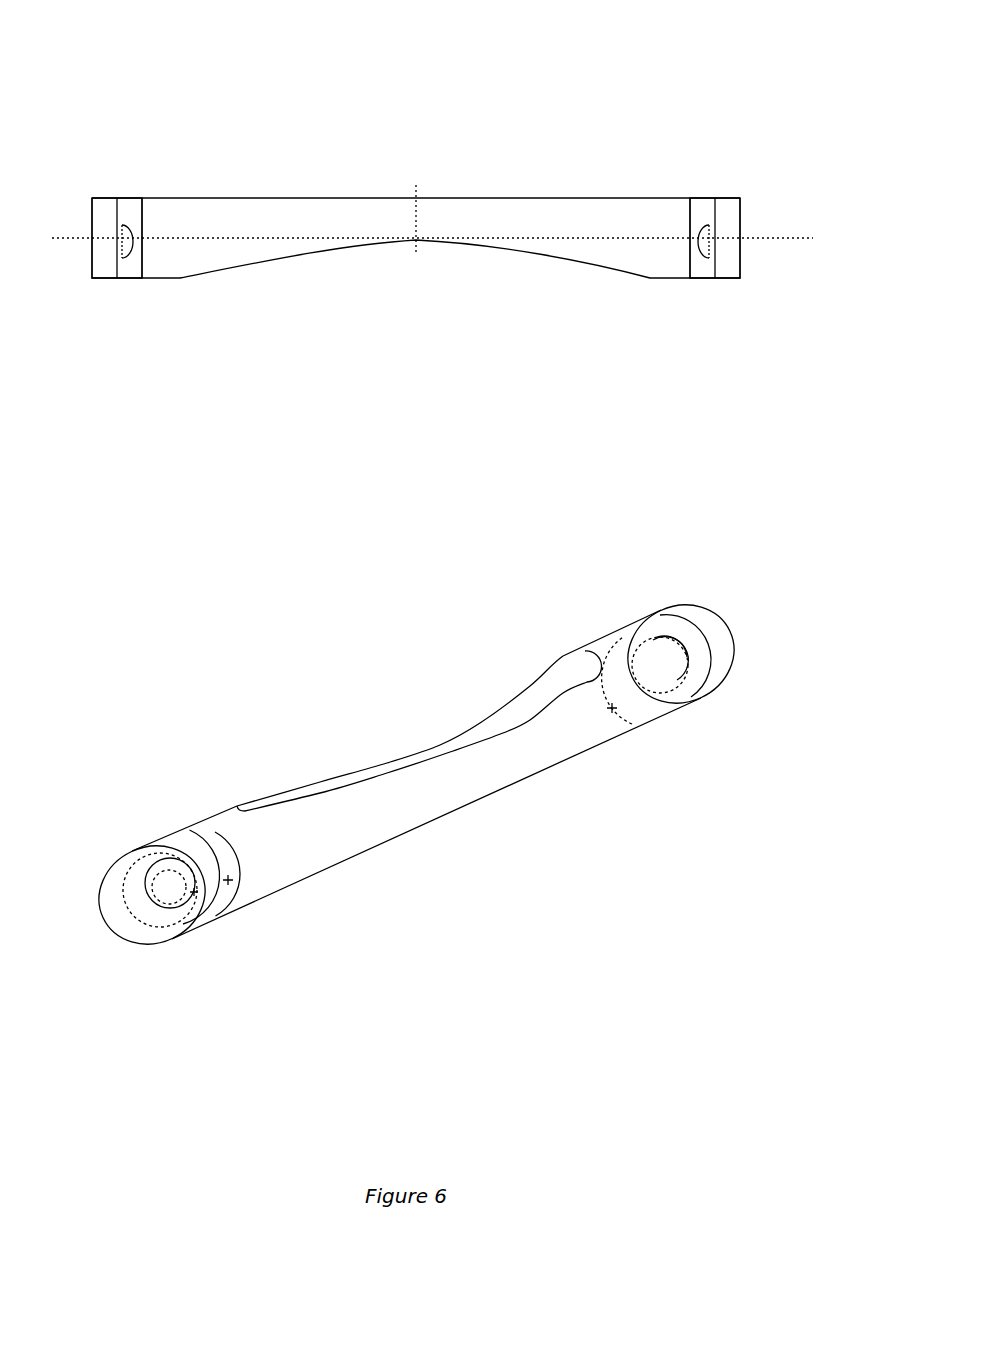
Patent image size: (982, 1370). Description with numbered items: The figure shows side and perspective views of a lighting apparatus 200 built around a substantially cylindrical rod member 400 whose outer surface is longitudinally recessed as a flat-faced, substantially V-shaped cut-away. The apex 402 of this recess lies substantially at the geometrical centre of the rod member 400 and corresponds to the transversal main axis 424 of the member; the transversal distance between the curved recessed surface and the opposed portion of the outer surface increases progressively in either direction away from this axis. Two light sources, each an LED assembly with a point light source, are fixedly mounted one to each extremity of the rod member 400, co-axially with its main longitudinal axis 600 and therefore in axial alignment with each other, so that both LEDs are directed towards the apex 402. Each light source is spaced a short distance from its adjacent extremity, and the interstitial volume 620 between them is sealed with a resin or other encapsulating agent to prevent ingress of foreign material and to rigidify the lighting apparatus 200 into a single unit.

The lighting apparatus 200 is at (163, 80).
The cylindrical rod member 400 is at (228, 817).
The apex 402 is at (416, 240).
The transversal main axis 424 is at (415, 187).
The main longitudinal axis 600 is at (62, 238).
The interstitial volume 620 is at (128, 265).